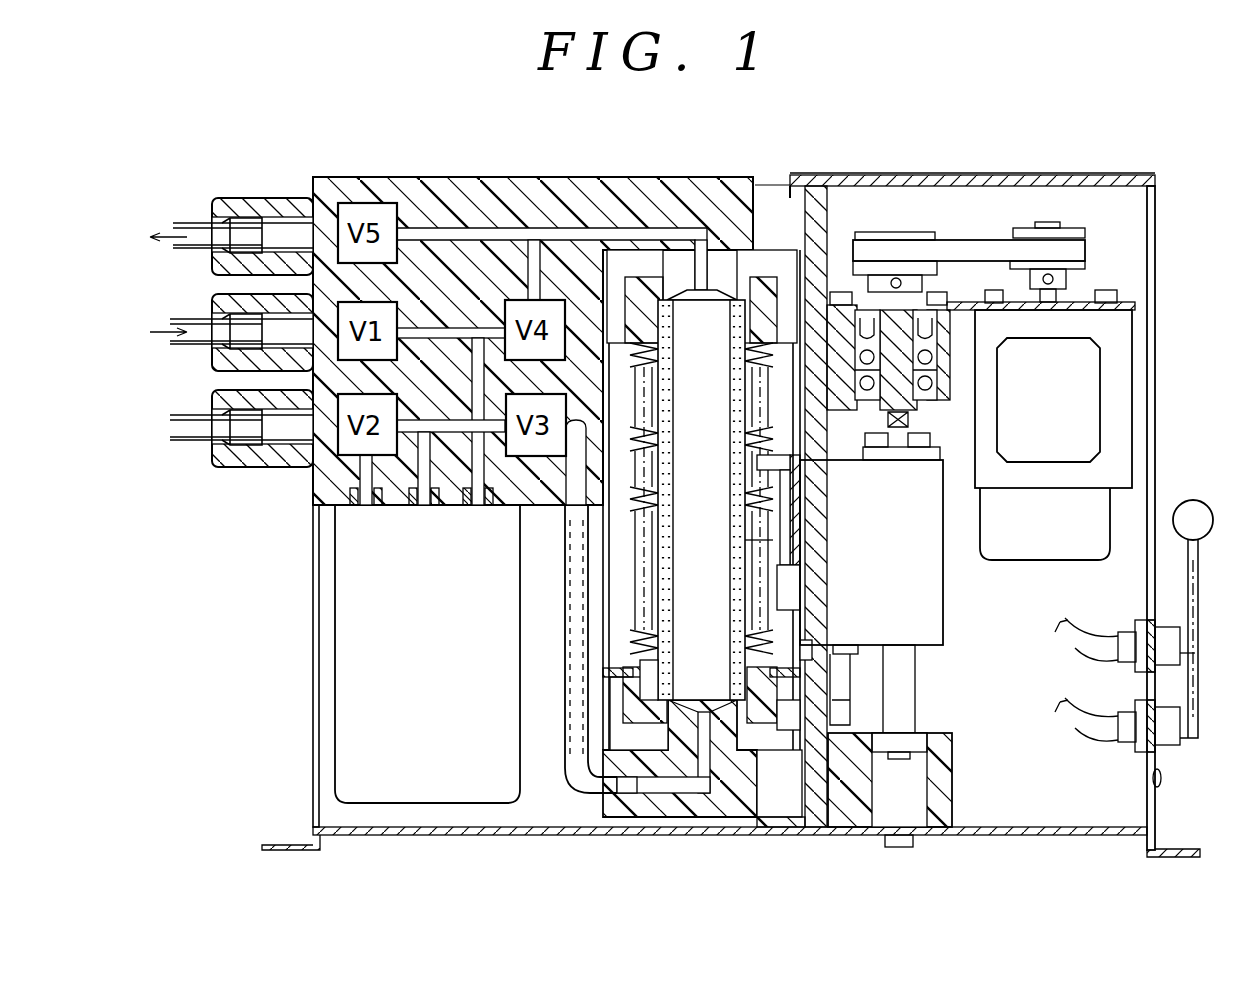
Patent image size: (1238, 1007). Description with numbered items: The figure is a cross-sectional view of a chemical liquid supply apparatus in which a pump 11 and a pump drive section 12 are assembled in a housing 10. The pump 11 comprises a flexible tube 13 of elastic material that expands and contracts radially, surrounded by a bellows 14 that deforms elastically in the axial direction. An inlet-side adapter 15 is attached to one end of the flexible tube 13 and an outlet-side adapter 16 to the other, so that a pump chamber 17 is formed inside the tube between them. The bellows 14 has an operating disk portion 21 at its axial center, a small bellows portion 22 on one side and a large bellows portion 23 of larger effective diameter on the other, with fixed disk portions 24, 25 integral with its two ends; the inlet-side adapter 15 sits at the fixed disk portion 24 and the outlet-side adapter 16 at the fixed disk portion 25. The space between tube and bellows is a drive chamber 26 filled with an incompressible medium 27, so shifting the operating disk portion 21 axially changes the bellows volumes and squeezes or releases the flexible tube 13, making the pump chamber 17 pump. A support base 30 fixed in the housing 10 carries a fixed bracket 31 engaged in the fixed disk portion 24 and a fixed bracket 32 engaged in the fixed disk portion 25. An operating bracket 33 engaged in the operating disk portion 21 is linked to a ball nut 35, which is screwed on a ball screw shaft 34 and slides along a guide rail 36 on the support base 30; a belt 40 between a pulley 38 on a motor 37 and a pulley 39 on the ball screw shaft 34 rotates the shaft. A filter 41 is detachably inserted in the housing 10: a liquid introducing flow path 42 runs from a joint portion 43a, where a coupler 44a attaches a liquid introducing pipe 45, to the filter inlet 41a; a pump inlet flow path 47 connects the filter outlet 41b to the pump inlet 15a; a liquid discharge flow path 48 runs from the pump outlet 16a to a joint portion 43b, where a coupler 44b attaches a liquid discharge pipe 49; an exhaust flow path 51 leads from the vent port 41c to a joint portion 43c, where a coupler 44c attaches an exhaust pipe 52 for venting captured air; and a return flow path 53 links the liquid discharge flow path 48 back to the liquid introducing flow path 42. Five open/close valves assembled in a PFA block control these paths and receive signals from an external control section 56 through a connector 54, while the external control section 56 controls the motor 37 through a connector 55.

The housing 10 is at (858, 178).
The pump 11 is at (787, 180).
The pump drive section 12 is at (985, 205).
The flexible tube 13 is at (678, 635).
The bellows 14 is at (790, 528).
The inlet-side adapter 15 is at (763, 768).
The pump inlet 15a is at (607, 783).
The outlet-side adapter 16 is at (737, 252).
The pump outlet 16a is at (687, 272).
The pump chamber 17 is at (712, 545).
The operating disk portion 21 is at (796, 486).
The small bellows portion 22 is at (645, 370).
The large bellows portion 23 is at (787, 613).
The fixed disk portion 24 is at (817, 680).
The fixed disk portion 25 is at (765, 287).
The drive chamber 26 is at (750, 555).
The incompressible medium 27 is at (660, 605).
The support base 30 is at (817, 650).
The fixed bracket 31 is at (807, 800).
The fixed bracket 32 is at (810, 200).
The operating bracket 33 is at (805, 510).
The ball screw shaft 34 is at (900, 715).
The ball nut 35 is at (933, 600).
The guide rail 36 is at (837, 707).
The motor 37 is at (1085, 548).
The pulley 38 is at (1065, 232).
The pulley 39 is at (925, 238).
The belt 40 is at (985, 255).
The filter 41 is at (507, 742).
The filter inlet 41a is at (480, 505).
The filter outlet 41b is at (422, 505).
The vent port 41c is at (375, 505).
The liquid introducing flow path 42 is at (420, 318).
The joint portion 43a is at (262, 302).
The joint portion 43b is at (305, 218).
The joint portion 43c is at (297, 450).
The coupler 44a is at (282, 390).
The coupler 44b is at (275, 210).
The coupler 44c is at (248, 468).
The liquid introducing pipe 45 is at (192, 343).
The pump inlet flow path 47 is at (447, 432).
The liquid discharge flow path 48 is at (450, 232).
The liquid discharge pipe 49 is at (188, 222).
The exhaust flow path 51 is at (343, 505).
The exhaust pipe 52 is at (205, 445).
The return flow path 53 is at (540, 250).
The connector 54 is at (1170, 635).
The connector 55 is at (1170, 737).
The external control section 56 is at (1192, 512).